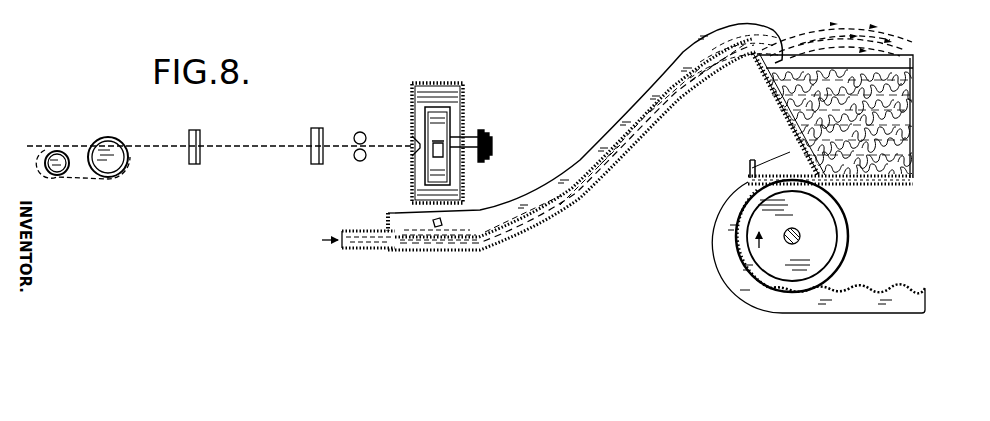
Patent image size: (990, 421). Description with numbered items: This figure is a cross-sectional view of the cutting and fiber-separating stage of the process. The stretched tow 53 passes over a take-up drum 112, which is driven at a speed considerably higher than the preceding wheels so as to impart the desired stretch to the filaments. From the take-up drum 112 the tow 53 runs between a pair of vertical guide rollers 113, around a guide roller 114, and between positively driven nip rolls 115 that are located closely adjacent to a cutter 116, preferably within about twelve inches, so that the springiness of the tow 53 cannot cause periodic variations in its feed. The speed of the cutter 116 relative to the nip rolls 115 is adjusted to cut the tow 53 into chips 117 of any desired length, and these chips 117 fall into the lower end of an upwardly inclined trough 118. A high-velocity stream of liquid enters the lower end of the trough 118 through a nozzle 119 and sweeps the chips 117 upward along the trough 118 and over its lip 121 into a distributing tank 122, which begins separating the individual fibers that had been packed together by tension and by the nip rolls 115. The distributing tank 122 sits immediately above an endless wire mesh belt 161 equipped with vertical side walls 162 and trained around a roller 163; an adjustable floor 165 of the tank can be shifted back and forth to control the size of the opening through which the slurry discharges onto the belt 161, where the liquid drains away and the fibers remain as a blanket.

The tow 53 is at (43, 144).
The take-up drum 112 is at (86, 181).
The vertical guide rollers 113 is at (195, 165).
The guide roller 114 is at (312, 132).
The nip rolls 115 is at (356, 158).
The cutter 116 is at (469, 108).
The chips 117 is at (440, 229).
The upwardly inclined trough 118 is at (592, 203).
The nozzle 119 is at (377, 244).
The lip 121 is at (758, 56).
The distributing tank 122 is at (784, 118).
The endless wire mesh belt 161 is at (880, 289).
The vertical side walls 162 is at (854, 302).
The roller 163 is at (847, 234).
The adjustable floor 165 is at (778, 176).